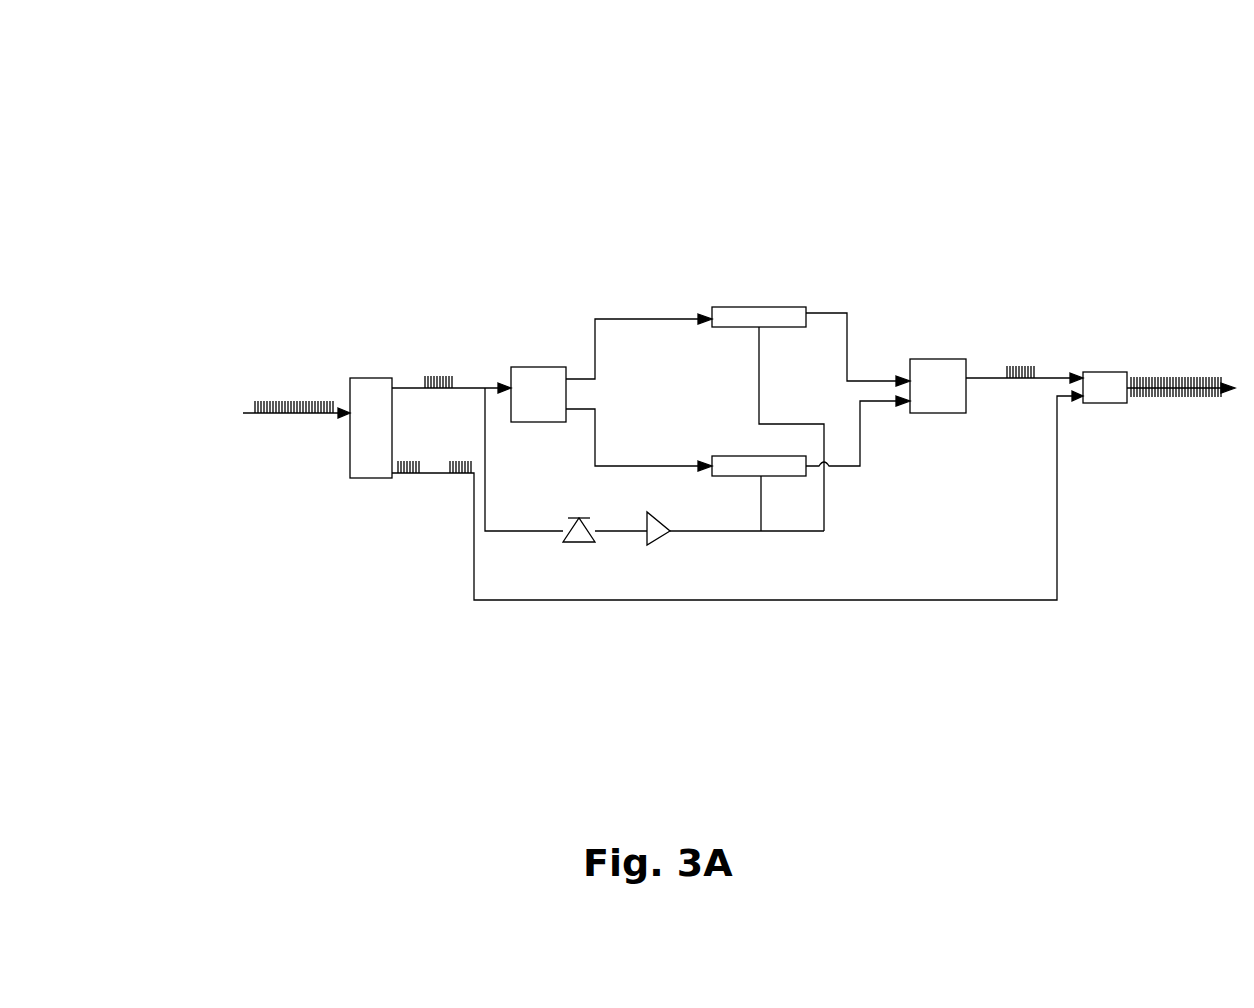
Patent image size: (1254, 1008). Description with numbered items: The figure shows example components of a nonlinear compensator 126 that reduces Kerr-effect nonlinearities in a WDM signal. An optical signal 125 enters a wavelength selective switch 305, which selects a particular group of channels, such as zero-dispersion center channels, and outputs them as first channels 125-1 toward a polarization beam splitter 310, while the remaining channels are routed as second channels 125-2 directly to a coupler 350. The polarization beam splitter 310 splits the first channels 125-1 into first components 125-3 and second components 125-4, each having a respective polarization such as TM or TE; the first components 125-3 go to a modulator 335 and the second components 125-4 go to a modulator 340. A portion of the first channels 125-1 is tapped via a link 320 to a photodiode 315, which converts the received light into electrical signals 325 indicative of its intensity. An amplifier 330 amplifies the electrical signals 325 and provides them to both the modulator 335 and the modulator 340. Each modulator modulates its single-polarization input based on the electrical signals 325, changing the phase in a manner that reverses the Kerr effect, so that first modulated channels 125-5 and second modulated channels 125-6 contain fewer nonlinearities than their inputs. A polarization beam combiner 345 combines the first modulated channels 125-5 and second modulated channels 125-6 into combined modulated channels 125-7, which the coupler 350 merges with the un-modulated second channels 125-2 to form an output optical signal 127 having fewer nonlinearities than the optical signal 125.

The nonlinear compensator 126 is at (185, 55).
The optical signal 125 is at (288, 415).
The wavelength selective switch 305 is at (348, 390).
The first channels 125-1 is at (413, 388).
The second channels 125-2 is at (435, 478).
The polarization beam splitter 310 is at (530, 367).
The first components 125-3 is at (611, 319).
The second components 125-4 is at (618, 465).
The modulator 335 is at (752, 307).
The modulator 340 is at (718, 456).
The first modulated channels 125-5 is at (840, 313).
The second modulated channels 125-6 is at (870, 402).
The polarization beam combiner 345 is at (933, 359).
The combined modulated channels 125-7 is at (1057, 376).
The coupler 350 is at (1112, 403).
The optical signal 127 is at (1175, 390).
The photodiode 315 is at (585, 542).
The link 320 is at (542, 531).
The amplifier 330 is at (653, 542).
The electrical signals 325 is at (824, 470).